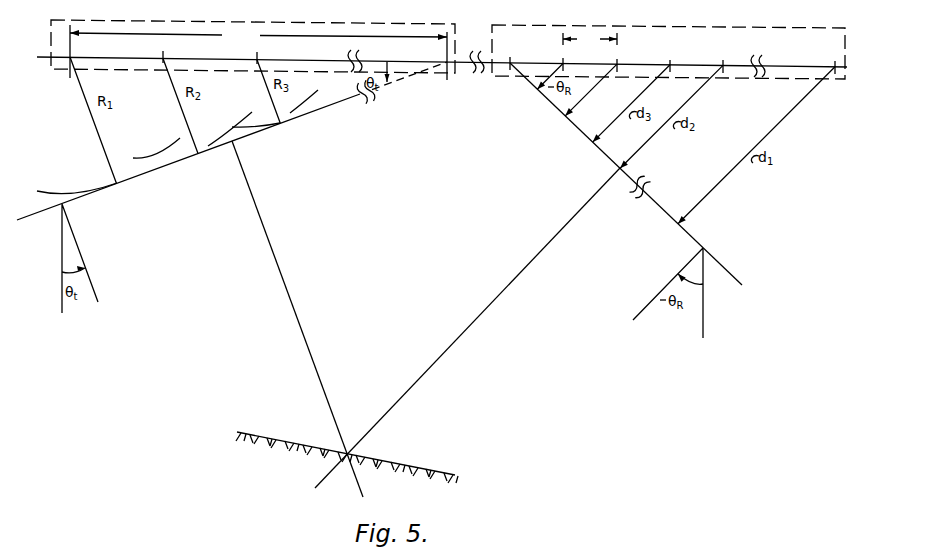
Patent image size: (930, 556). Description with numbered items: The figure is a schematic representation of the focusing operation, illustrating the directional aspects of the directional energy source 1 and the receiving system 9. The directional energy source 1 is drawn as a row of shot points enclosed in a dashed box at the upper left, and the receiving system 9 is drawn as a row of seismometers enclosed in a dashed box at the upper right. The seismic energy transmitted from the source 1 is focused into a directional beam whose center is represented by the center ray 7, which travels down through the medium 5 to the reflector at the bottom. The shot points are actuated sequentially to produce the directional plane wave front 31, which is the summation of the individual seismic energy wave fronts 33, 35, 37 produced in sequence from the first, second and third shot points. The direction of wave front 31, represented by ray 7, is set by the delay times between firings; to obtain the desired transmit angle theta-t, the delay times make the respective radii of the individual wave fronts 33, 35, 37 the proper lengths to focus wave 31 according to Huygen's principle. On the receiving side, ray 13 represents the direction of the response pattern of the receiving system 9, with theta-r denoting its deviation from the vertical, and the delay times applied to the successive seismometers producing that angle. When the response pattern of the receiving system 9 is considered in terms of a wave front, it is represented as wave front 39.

The directional energy source 1 is at (293, 22).
The receiving system 9 is at (628, 27).
The earth formation (propagation medium) 5 is at (425, 226).
The center ray 7 is at (265, 231).
The ray 13 is at (525, 268).
The directional plane wave front 31 is at (235, 143).
The individual seismic energy wave front 33 is at (83, 169).
The individual seismic energy wave front 35 is at (226, 136).
The individual seismic energy wave front 37 is at (307, 107).
The receiver response wave front 39 is at (667, 214).